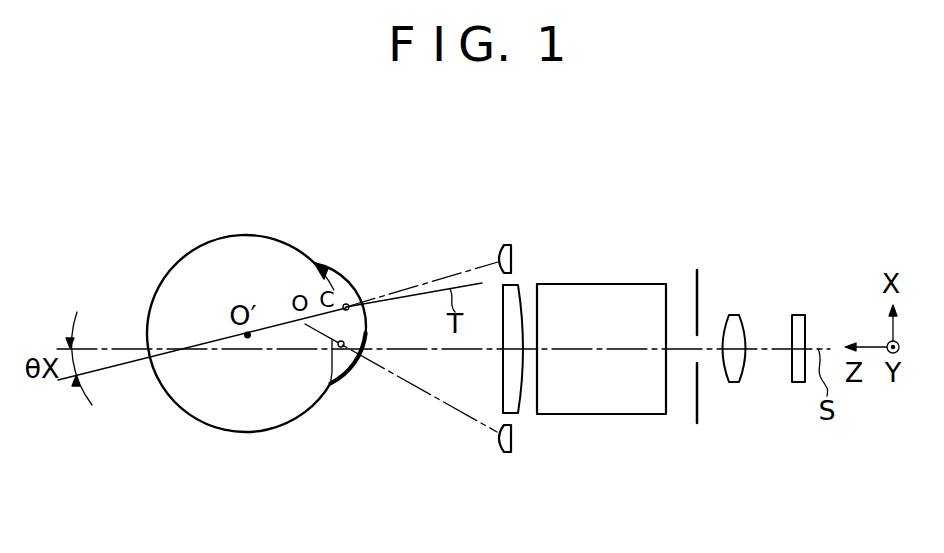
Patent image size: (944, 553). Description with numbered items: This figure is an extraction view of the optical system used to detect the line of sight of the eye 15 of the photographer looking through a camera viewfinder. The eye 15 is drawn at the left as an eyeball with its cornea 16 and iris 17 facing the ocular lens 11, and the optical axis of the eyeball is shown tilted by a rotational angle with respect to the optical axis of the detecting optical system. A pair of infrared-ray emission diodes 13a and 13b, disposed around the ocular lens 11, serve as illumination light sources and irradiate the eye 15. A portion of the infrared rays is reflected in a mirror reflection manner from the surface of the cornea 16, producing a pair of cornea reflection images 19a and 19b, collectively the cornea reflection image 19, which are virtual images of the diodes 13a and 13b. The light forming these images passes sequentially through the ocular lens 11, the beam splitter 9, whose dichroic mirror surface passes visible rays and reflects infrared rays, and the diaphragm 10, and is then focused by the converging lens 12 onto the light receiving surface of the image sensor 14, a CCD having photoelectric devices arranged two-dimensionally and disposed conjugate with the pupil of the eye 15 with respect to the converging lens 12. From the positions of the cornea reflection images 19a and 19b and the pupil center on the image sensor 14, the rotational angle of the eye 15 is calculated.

The beam splitter 9 is at (623, 283).
The diaphragm 10 is at (698, 280).
The ocular lens 11 is at (513, 284).
The converging lens 12 is at (734, 314).
The infrared-ray emission diode 13a is at (511, 244).
The infrared-ray emission diode 13b is at (511, 452).
The image sensor 14 is at (795, 313).
The eye of the observer 15 is at (236, 258).
The cornea 16 is at (347, 279).
The iris 17 is at (325, 264).
The cornea reflection image 19 is at (378, 404).
The cornea reflection image 19a is at (363, 343).
The cornea reflection image 19b is at (350, 398).